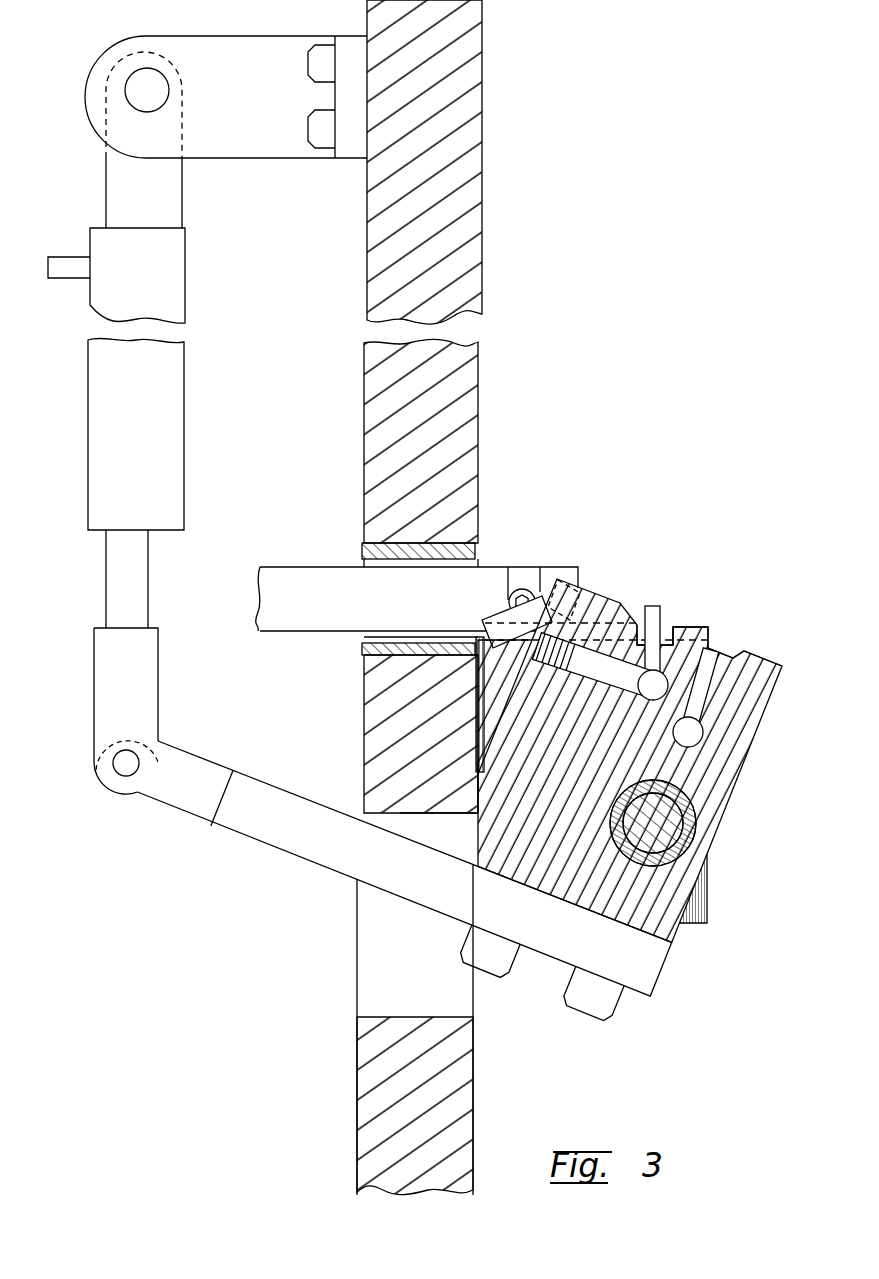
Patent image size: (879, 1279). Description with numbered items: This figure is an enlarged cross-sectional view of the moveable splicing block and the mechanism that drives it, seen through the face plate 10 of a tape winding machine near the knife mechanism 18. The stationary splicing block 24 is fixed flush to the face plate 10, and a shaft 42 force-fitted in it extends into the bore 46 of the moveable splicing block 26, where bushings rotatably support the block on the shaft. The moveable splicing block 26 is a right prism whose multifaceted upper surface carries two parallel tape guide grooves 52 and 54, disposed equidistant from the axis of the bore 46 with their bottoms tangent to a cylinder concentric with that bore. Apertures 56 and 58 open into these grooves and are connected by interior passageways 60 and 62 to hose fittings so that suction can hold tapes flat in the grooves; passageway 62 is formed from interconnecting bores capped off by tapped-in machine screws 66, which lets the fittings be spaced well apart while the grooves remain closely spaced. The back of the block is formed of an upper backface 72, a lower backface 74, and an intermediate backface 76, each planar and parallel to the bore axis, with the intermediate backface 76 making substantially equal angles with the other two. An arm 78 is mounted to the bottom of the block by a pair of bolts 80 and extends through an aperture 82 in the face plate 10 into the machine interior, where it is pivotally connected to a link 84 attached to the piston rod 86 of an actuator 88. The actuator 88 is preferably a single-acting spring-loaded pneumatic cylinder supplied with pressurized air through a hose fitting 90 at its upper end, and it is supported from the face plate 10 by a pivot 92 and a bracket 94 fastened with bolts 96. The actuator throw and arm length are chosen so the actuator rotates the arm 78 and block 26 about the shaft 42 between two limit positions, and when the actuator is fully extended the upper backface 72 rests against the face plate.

The face plate 10 is at (480, 433).
The knife mechanism 18 is at (490, 567).
The stationary splicing block 24 is at (707, 893).
The moveable splicing block 26 is at (734, 786).
The shaft 42 is at (665, 836).
The bore 46 is at (688, 815).
The groove 52 is at (730, 645).
The groove 54 is at (662, 628).
The apertures 56 is at (722, 690).
The apertures 58 is at (654, 645).
The interior passageway 60 is at (703, 732).
The interior passageway 62 is at (643, 640).
The machine screws 66 is at (577, 640).
The upper backface 72 is at (517, 677).
The lower backface 74 is at (452, 820).
The intermediate backface 76 is at (480, 773).
The arm 78 is at (248, 828).
The bolts 80 is at (578, 985).
The aperture 82 is at (365, 1018).
The link 84 is at (118, 765).
The piston rod 86 is at (105, 620).
The actuator 88 is at (90, 420).
The hose fitting 90 is at (69, 262).
The pivot 92 is at (134, 89).
The bracket 94 is at (247, 48).
The bolts 96 is at (305, 130).